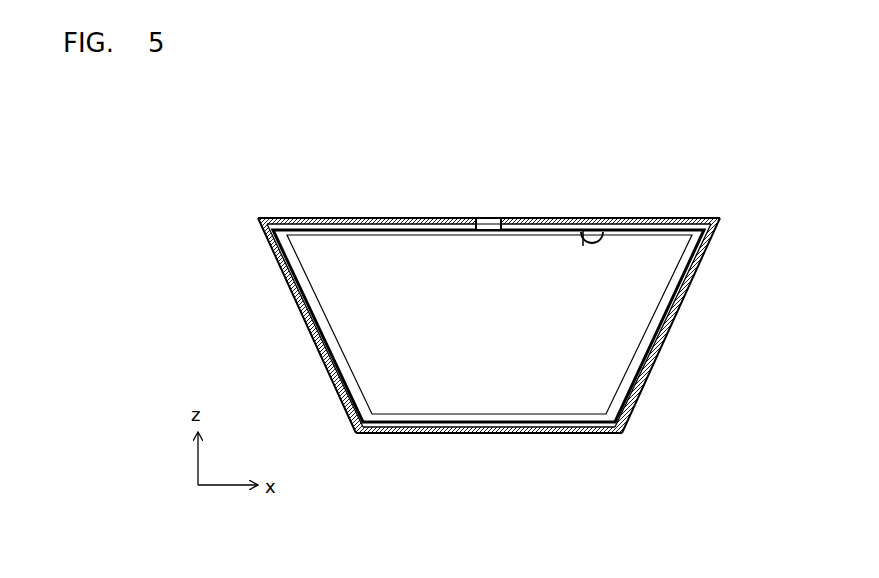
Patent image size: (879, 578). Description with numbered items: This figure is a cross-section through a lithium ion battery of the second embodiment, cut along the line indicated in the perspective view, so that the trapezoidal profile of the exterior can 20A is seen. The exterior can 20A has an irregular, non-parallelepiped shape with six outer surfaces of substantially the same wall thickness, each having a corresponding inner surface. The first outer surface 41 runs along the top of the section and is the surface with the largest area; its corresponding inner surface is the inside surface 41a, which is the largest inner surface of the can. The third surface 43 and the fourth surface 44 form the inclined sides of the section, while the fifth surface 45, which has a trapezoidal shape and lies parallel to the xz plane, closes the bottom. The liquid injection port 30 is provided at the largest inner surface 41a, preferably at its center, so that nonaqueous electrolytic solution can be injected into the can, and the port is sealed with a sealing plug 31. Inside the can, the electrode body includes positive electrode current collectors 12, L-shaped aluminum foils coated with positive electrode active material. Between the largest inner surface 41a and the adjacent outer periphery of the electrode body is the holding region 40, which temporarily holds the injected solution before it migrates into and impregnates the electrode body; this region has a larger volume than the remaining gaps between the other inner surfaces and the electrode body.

The exterior can 20A is at (485, 315).
The first outer surface 41 is at (347, 216).
The inside surface 41a is at (611, 236).
The holding region 40 is at (426, 228).
The sealing plug 31 is at (496, 216).
The liquid injection port 30 is at (500, 216).
The positive electrode current collector 12 is at (312, 262).
The third outer surface 43 is at (302, 318).
The fourth outer surface 44 is at (671, 322).
The fifth outer surface 45 is at (468, 436).